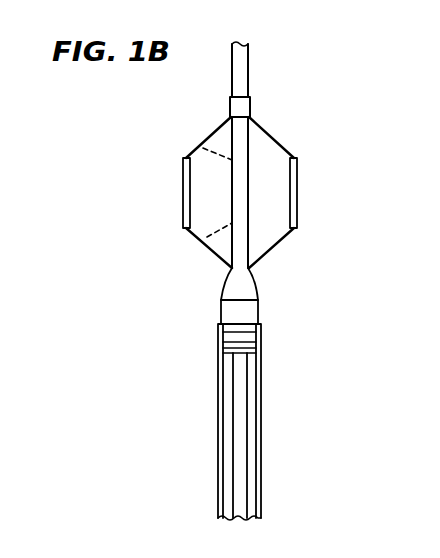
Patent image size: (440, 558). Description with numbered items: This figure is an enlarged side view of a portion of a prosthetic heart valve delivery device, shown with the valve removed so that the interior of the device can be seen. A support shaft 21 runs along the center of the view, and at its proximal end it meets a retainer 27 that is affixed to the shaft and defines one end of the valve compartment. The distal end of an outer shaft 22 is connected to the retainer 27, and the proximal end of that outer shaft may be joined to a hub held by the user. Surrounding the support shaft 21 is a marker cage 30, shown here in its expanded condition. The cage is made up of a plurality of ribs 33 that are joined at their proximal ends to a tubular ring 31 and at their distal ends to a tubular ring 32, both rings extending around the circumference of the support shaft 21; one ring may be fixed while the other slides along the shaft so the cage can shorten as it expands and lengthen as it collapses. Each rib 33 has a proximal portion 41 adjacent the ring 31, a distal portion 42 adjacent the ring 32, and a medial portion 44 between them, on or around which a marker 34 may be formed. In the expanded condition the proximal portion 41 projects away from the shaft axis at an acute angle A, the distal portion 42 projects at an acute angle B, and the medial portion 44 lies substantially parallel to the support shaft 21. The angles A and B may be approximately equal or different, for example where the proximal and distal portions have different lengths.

The support shaft 21 is at (245, 184).
The outer shaft 22 is at (262, 418).
The retainer 27 is at (257, 295).
The marker cage 30 is at (243, 191).
The tubular ring 31 is at (252, 270).
The tubular ring 32 is at (252, 105).
The rib 33 is at (283, 246).
The marker 34 is at (298, 176).
The proximal portion 41 is at (206, 262).
The distal portion 42 is at (215, 128).
The medial portion 44 is at (183, 197).
The acute angle A is at (207, 236).
The acute angle B is at (210, 153).